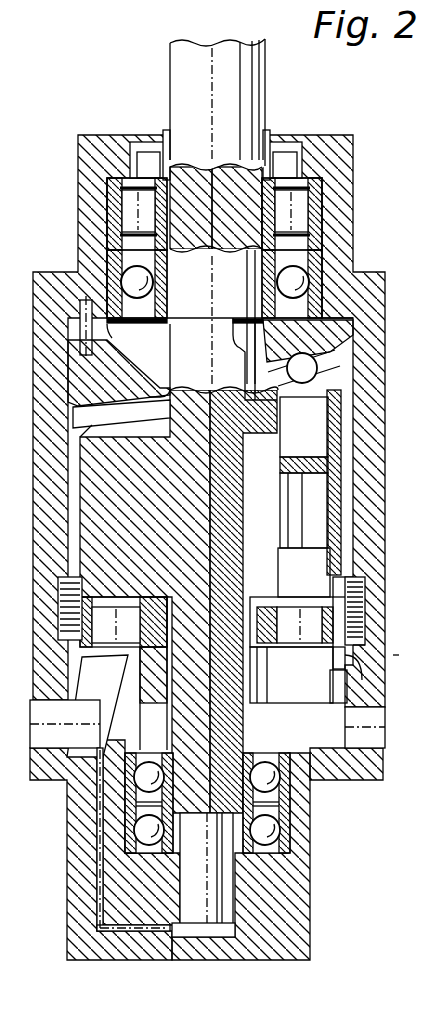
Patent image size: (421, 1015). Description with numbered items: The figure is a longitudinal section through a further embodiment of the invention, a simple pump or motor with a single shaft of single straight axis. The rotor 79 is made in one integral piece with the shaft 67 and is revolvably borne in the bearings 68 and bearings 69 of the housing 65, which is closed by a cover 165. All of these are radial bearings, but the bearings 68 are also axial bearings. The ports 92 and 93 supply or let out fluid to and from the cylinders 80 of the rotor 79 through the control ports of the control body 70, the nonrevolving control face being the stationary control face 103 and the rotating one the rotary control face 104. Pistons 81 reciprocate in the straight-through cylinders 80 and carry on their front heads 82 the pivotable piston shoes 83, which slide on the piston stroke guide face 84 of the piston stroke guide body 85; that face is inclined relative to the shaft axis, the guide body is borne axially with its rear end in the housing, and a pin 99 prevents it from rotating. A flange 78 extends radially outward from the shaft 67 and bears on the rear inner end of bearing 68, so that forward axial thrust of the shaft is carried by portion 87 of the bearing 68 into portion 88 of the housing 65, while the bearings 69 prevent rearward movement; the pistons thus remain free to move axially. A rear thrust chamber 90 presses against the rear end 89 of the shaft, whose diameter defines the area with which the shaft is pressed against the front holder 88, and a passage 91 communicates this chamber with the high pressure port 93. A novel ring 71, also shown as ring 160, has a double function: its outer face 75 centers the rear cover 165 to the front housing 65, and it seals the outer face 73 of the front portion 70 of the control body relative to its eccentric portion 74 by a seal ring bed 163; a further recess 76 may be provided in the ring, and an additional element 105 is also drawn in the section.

The housing 65 is at (97, 143).
The cover 165 is at (307, 847).
The shaft 67 is at (262, 74).
The bearings 68 is at (306, 208).
The bearings 69 is at (267, 783).
The control body 70 is at (265, 648).
The ring 71 is at (80, 662).
The outer face 73 is at (368, 600).
The eccentric portion 74 is at (330, 690).
The outer face 75 is at (370, 623).
The recess 76 is at (368, 590).
The flange 78 is at (165, 322).
The rotor 79 is at (340, 448).
The cylinders 80 is at (296, 608).
The pistons 81 is at (292, 537).
The front heads 82 is at (300, 384).
The piston shoes 83 is at (253, 363).
The piston stroke guide face 84 is at (153, 387).
The piston stroke guide body 85 is at (128, 372).
The portion of bearing 87 is at (316, 178).
The portion of housing 88 is at (307, 157).
The rear end of shaft 89 is at (230, 875).
The rear thrust chamber 90 is at (235, 928).
The passage 91 is at (143, 937).
The port 92 is at (350, 735).
The port 93 is at (65, 731).
The pin 99 is at (80, 278).
The stationary control face 103 is at (147, 600).
The rotary control face 104 is at (113, 606).
The spacer 105 is at (407, 655).
The ring 160 is at (357, 652).
The seal ring bed 163 is at (332, 657).